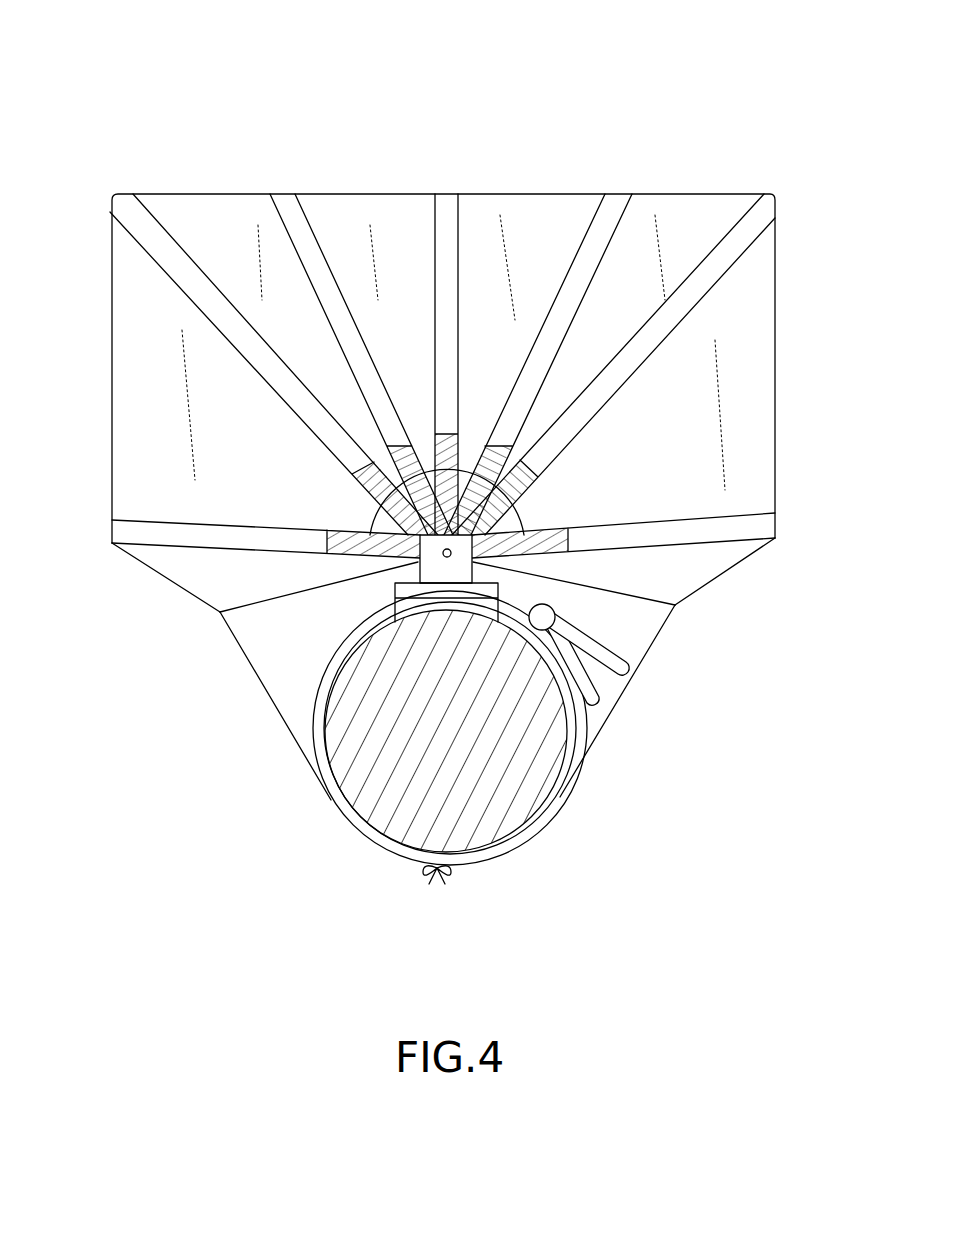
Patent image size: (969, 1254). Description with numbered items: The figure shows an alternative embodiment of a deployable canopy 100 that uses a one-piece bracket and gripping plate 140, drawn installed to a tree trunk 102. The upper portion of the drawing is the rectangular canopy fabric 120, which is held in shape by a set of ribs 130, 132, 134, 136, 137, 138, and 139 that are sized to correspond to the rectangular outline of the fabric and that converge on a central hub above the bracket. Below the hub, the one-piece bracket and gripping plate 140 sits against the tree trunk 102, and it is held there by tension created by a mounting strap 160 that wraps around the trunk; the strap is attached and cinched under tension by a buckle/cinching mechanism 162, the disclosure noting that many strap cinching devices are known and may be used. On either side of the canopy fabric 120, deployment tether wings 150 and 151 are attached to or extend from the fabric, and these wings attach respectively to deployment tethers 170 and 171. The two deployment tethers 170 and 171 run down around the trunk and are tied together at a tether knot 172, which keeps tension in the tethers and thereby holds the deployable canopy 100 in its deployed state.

The deployable canopy 100 is at (208, 81).
The tree trunk 102 is at (540, 807).
The canopy fabric 120 is at (392, 208).
The rib 130 is at (158, 530).
The rib 132 is at (136, 214).
The rib 134 is at (284, 196).
The rib 136 is at (447, 208).
The rib 137 is at (617, 200).
The rib 138 is at (766, 208).
The rib 139 is at (763, 523).
The one-piece bracket and gripping plate 140 is at (395, 598).
The deployment tether wing 150 is at (700, 568).
The deployment tether wing 151 is at (220, 585).
The mounting strap 160 is at (353, 820).
The buckle/cinching mechanism 162 is at (625, 675).
The deployment tether 170 is at (597, 740).
The deployment tether 171 is at (283, 727).
The tether knot 172 is at (434, 878).